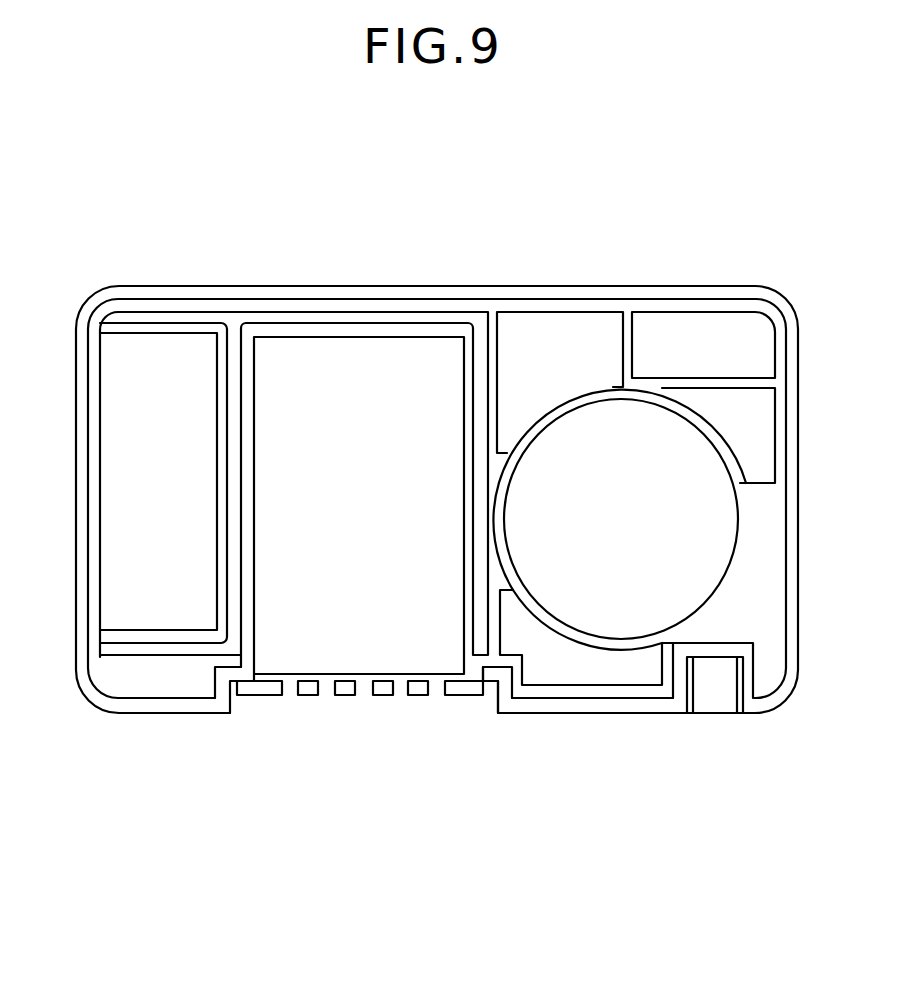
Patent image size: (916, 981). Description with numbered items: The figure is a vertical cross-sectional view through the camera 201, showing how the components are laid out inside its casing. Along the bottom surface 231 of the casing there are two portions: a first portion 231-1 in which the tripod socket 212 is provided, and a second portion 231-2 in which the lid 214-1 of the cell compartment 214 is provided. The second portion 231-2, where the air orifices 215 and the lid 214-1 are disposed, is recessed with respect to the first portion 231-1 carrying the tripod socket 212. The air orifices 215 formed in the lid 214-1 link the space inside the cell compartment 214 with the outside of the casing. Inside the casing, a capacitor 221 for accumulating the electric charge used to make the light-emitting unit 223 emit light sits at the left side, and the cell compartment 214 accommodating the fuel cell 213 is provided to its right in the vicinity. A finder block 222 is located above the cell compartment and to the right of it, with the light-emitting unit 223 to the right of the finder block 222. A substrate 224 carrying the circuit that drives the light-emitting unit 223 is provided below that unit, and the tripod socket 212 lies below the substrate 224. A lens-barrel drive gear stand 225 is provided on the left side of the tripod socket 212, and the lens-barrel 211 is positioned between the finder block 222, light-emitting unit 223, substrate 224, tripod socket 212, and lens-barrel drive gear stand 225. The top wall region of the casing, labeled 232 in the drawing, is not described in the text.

The camera 201 is at (742, 836).
The lens-barrel 211 is at (718, 553).
The tripod socket 212 is at (718, 692).
The fuel cell 213 is at (398, 360).
The cell compartment 214 is at (300, 334).
The lid of the cell compartment 214-1 is at (262, 688).
The air orifices 215 is at (365, 688).
The capacitor 221 is at (153, 365).
The finder block 222 is at (575, 330).
The light-emitting unit 223 is at (733, 328).
The substrate 224 is at (762, 422).
The lens-barrel drive gear stand 225 is at (600, 668).
The bottom surface 231 is at (145, 712).
The first portion 231-1 is at (552, 712).
The second portion 231-2 is at (493, 682).
The top wall 232 is at (232, 290).